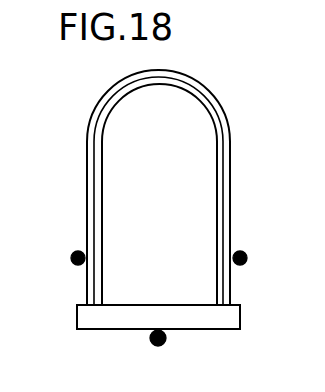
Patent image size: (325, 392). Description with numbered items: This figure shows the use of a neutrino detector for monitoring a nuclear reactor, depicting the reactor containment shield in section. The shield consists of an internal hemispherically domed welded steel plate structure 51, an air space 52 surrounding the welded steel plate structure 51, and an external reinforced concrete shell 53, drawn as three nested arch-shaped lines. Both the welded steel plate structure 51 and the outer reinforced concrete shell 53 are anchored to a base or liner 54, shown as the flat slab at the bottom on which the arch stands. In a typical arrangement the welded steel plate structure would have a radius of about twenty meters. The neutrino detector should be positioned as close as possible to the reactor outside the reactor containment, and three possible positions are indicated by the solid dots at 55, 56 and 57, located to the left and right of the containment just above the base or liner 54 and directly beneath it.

The welded steel plate structure 51 is at (199, 93).
The air space 52 is at (220, 158).
The reinforced concrete shell 53 is at (229, 118).
The base or liner 54 is at (242, 314).
The neutrino detector position 55 is at (72, 256).
The neutrino detector position 56 is at (245, 254).
The neutrino detector position 57 is at (165, 343).